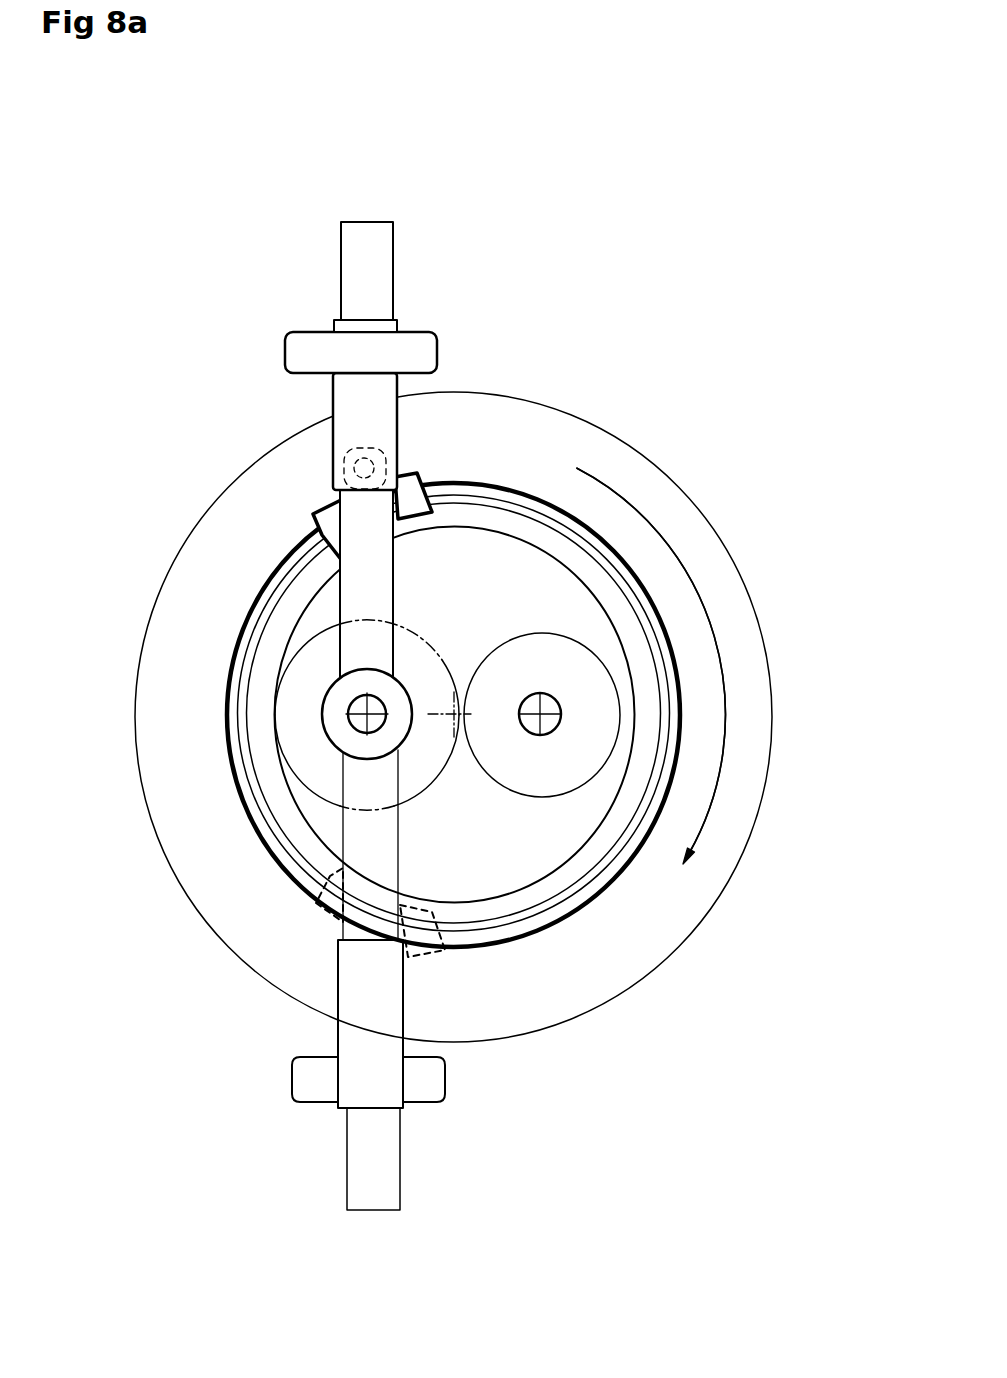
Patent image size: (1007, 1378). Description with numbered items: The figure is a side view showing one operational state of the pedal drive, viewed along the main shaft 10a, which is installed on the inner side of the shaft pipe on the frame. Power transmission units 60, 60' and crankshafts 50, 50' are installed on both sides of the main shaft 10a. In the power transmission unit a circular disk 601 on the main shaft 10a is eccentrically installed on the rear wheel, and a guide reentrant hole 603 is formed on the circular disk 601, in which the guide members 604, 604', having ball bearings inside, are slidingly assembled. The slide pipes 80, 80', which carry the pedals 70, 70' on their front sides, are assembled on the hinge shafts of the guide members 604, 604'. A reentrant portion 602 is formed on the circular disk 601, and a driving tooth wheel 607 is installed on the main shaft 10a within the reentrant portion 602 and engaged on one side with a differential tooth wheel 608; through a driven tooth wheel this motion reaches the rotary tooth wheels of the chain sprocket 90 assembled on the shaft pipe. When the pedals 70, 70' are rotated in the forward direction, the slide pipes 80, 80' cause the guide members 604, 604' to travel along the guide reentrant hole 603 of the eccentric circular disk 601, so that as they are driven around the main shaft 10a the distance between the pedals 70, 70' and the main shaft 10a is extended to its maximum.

The pedal 70 is at (406, 297).
The slide pipe 80 is at (402, 431).
The crankshaft 50 is at (402, 590).
The guide member 604 is at (345, 514).
The reentrant portion 602 is at (505, 545).
The chain sprocket 90 is at (678, 491).
The power transmission unit 60 is at (707, 666).
The power transmission unit 60' is at (742, 660).
The driving tooth wheel 607 is at (276, 704).
The main shaft 10a is at (349, 716).
The differential tooth wheel 608 is at (505, 795).
The crankshaft 50' is at (309, 845).
The guide member 604' is at (396, 940).
The guide reentrant hole 603 is at (505, 927).
The circular disk 601 is at (580, 878).
The slide pipe 80' is at (313, 1075).
The pedal 70' is at (394, 1118).